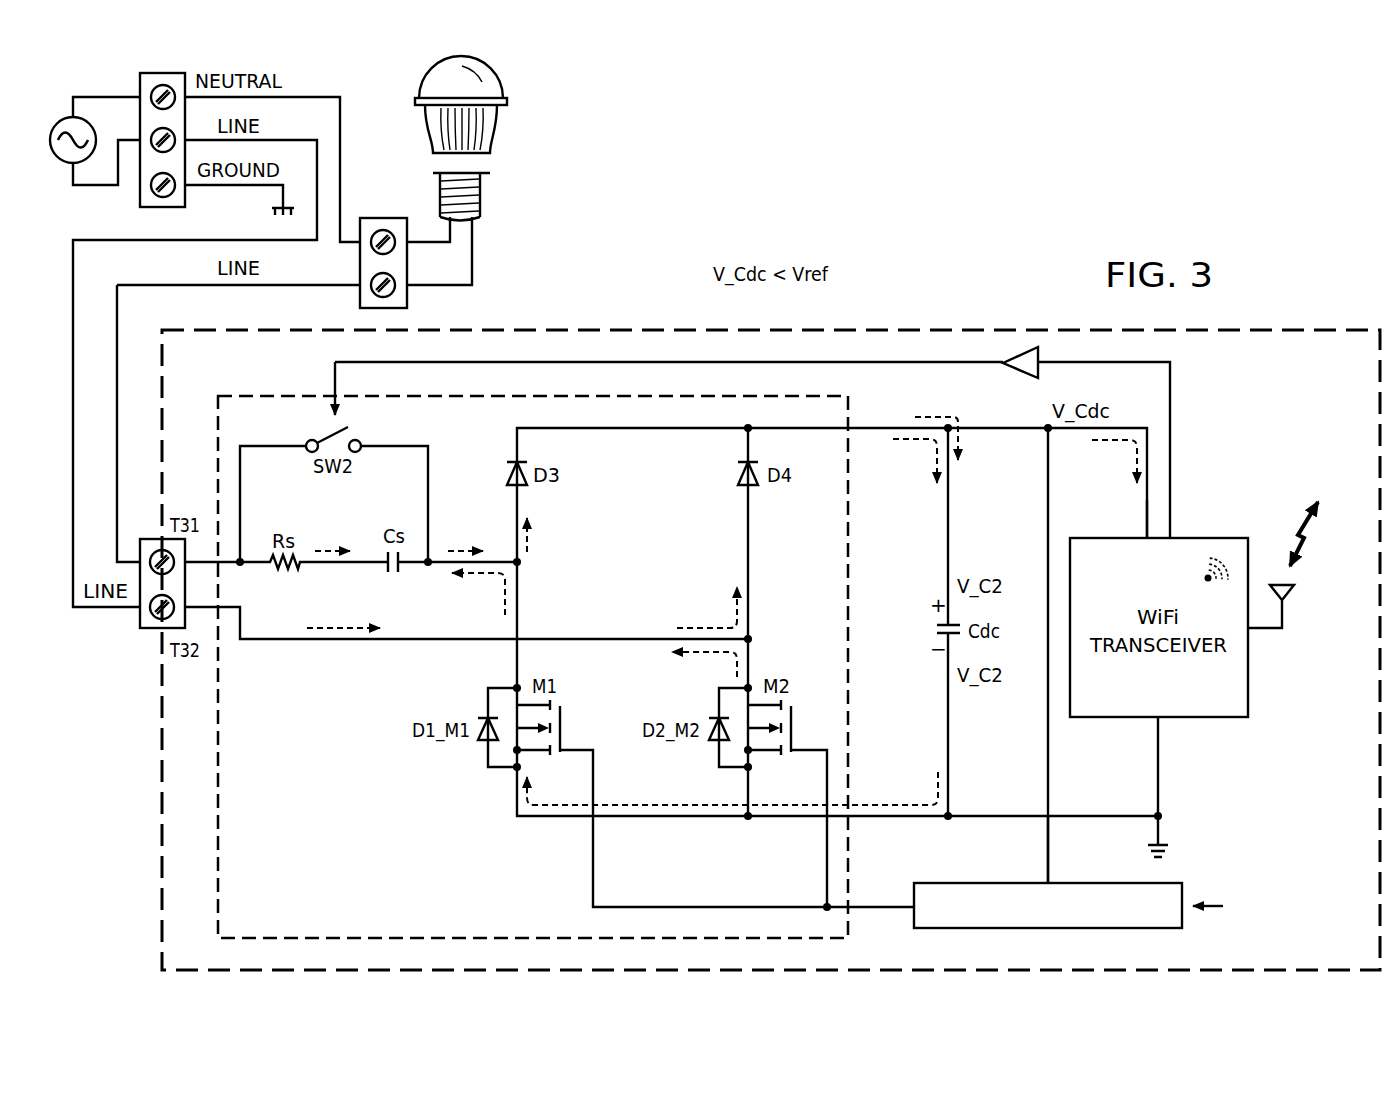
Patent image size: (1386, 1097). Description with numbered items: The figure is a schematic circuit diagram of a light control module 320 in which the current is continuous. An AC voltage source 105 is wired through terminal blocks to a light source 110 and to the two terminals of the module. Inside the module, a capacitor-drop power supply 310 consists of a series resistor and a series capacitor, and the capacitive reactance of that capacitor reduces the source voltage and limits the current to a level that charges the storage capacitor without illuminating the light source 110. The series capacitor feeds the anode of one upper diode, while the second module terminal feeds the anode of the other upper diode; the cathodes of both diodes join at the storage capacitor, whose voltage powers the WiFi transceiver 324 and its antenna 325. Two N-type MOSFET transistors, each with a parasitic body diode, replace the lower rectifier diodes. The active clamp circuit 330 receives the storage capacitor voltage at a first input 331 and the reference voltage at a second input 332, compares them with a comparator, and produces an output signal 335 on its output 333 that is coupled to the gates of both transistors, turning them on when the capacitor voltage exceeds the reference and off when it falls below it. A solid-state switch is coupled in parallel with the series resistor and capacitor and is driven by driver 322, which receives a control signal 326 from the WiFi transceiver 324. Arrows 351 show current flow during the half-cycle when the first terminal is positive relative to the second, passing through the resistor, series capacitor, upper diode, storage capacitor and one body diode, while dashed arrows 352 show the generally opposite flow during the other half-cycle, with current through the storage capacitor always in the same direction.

The AC voltage source 105 is at (58, 120).
The light source 110 is at (507, 101).
The capacitor-drop power supply 310 is at (388, 897).
The light control module 320 is at (1295, 441).
The driver 322 is at (1017, 372).
The WiFi transceiver 324 is at (1203, 719).
The antenna 325 is at (1290, 598).
The control signal 326 is at (1172, 508).
The active clamp circuit 330 is at (1092, 882).
The input 331 is at (1040, 880).
The input 332 is at (1187, 915).
The output 333 is at (908, 914).
The output signal 335 is at (705, 905).
The arrows 351 is at (333, 548).
The dashed arrows 352 is at (330, 627).